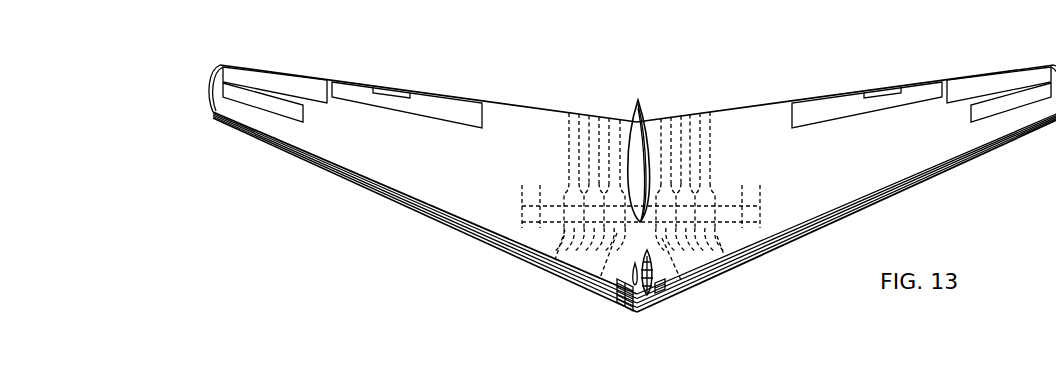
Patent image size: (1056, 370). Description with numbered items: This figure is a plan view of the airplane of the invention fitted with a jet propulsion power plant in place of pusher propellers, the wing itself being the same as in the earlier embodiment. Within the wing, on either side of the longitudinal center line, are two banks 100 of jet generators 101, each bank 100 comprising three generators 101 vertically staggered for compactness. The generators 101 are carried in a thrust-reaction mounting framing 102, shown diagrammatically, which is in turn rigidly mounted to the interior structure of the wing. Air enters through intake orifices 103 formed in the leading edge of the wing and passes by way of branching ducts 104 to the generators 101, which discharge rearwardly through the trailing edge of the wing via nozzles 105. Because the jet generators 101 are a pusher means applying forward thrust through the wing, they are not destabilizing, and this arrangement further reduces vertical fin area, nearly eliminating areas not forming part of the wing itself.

The bank of jet generators 100 is at (568, 181).
The jet generator 101 is at (660, 226).
The thrust-reaction mounting framing 102 is at (520, 212).
The intake orifice 103 is at (570, 281).
The branching duct 104 is at (565, 234).
The nozzle 105 is at (571, 114).